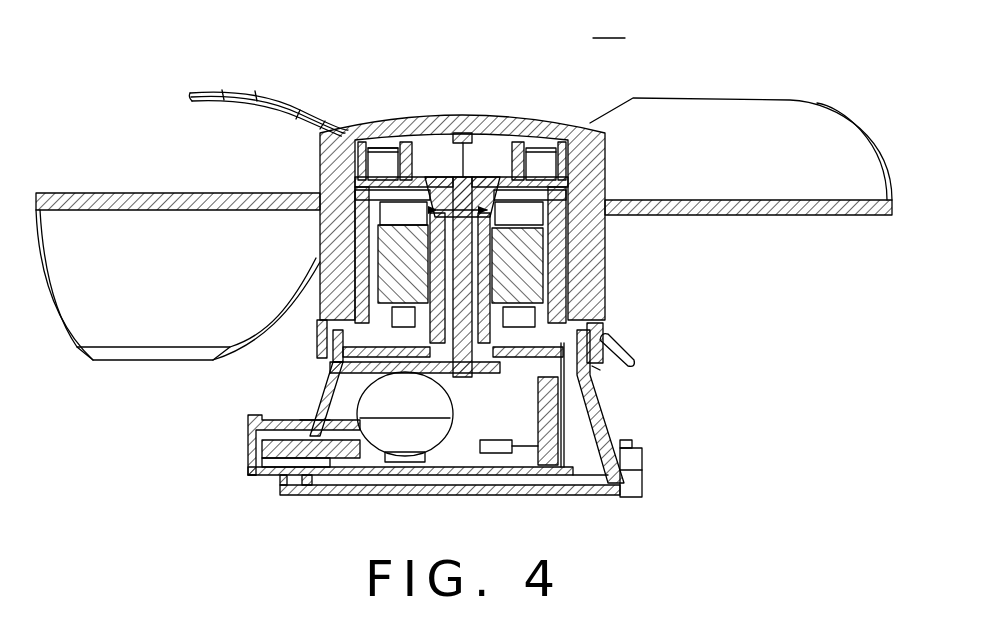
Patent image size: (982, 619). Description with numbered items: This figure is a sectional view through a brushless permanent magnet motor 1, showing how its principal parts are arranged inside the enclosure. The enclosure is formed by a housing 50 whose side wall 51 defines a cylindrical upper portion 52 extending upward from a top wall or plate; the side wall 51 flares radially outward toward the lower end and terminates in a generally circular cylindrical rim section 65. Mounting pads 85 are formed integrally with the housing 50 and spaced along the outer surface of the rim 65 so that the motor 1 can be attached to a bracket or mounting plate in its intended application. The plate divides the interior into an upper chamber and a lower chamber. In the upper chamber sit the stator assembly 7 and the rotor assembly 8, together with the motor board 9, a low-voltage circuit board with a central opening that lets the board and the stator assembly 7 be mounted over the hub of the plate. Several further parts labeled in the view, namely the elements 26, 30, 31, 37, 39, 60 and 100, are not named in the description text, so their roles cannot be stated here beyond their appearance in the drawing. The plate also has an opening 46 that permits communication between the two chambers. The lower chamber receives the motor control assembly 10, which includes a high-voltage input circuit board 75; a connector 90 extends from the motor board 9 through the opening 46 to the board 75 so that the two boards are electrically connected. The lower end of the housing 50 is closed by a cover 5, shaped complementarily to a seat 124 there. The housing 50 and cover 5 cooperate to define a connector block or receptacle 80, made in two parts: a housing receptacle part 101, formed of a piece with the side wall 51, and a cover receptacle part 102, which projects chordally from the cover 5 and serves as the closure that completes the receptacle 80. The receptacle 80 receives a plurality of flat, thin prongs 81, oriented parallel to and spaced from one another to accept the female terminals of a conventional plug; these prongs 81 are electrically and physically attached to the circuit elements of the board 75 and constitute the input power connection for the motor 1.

The brushless permanent magnet motor 1 is at (550, 72).
The cover 5 is at (532, 497).
The stator assembly 7 is at (520, 268).
The rotor assembly 8 is at (490, 253).
The motor board assembly 9 is at (535, 310).
The motor control assembly 10 is at (458, 448).
The motor shaft 26 is at (340, 292).
The motor housing cover 30 is at (447, 118).
The fan blade 31 is at (238, 107).
The stator 37 is at (400, 152).
The lower housing wall 39 is at (318, 349).
The opening 46 is at (603, 326).
The housing 50 is at (626, 465).
The side wall 51 is at (592, 400).
The cylindrical upper portion 52 is at (328, 372).
The frame sleeve 60 is at (552, 232).
The cylindrical rim section 65 is at (632, 446).
The circuit board 75 is at (460, 476).
The connector block or receptacle 80 is at (300, 418).
The prongs 81 is at (270, 462).
The mounting pads 85 is at (640, 482).
The connector 90 is at (566, 415).
The hinge pin 100 is at (598, 372).
The housing receptacle part 101 is at (272, 418).
The cover receptacle part 102 is at (255, 470).
The seat 124 is at (598, 497).